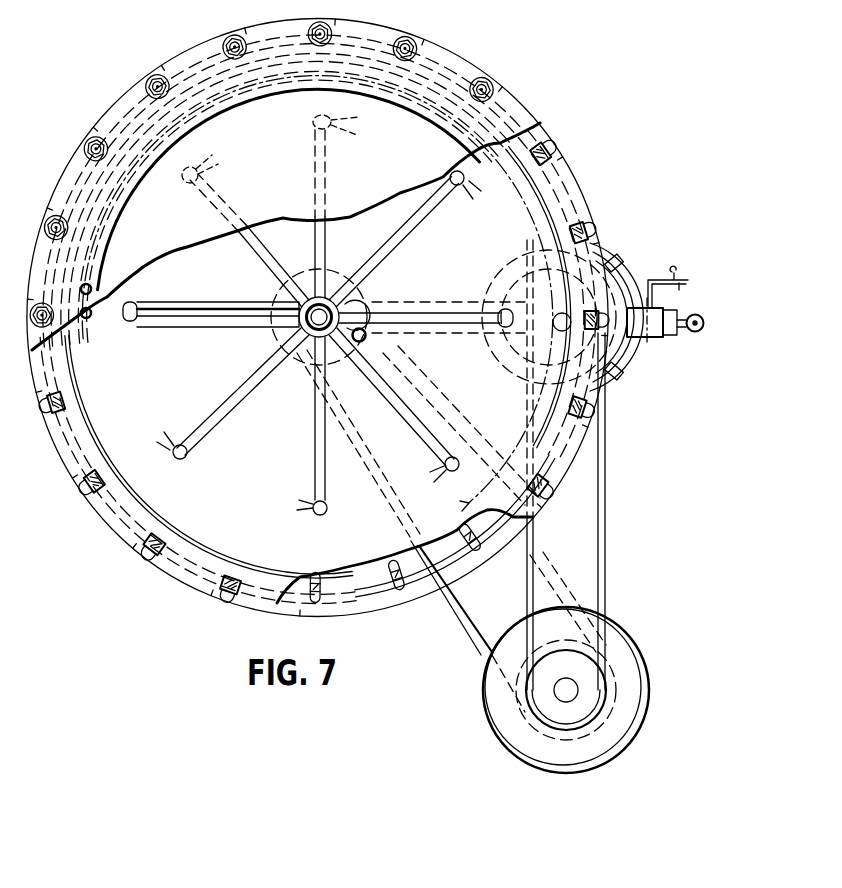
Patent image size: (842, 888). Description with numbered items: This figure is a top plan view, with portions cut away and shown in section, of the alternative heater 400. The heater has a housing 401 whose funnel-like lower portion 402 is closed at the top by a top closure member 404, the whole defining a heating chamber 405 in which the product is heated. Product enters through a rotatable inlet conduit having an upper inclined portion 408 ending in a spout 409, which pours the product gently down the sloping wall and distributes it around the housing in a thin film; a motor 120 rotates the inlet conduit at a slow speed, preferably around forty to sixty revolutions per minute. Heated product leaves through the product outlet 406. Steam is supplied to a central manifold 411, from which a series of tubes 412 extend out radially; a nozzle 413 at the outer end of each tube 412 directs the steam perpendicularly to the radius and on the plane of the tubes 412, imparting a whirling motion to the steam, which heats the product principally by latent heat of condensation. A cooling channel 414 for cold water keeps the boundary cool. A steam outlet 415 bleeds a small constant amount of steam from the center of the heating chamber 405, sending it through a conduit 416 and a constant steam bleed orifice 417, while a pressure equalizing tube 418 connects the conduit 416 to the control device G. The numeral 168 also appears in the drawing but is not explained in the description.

The heater 400 is at (513, 92).
The housing 401 is at (282, 129).
The funnel-like lower portion 402 is at (357, 560).
The top closure member 404 is at (343, 225).
The heating chamber 405 is at (275, 461).
The product outlet 406 is at (365, 305).
The upper inclined portion 408 is at (168, 328).
The spout 409 is at (90, 322).
The central manifold 411 is at (298, 308).
The tubes 412 is at (258, 250).
The nozzle 413 is at (462, 180).
The cooling channel 414 is at (92, 287).
The steam outlet 415 is at (362, 343).
The conduit 416 is at (697, 315).
The constant steam bleed orifice 417 is at (705, 323).
The pressure equalizing tube 418 is at (675, 338).
The finger 168 is at (313, 512).
The motor 120 is at (522, 742).
The control device G is at (640, 262).